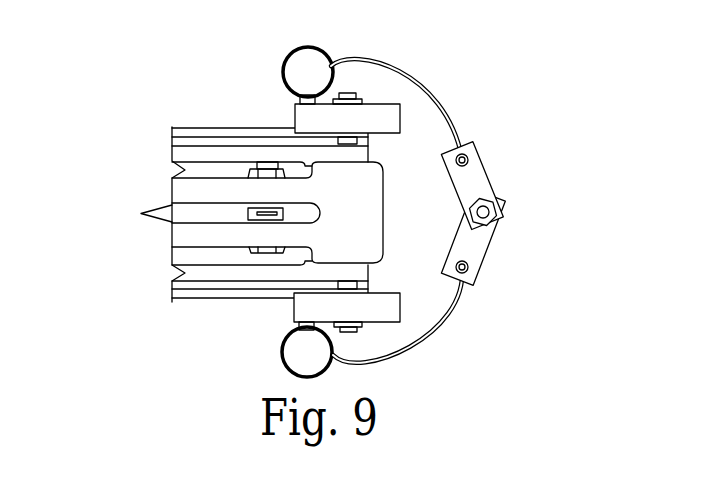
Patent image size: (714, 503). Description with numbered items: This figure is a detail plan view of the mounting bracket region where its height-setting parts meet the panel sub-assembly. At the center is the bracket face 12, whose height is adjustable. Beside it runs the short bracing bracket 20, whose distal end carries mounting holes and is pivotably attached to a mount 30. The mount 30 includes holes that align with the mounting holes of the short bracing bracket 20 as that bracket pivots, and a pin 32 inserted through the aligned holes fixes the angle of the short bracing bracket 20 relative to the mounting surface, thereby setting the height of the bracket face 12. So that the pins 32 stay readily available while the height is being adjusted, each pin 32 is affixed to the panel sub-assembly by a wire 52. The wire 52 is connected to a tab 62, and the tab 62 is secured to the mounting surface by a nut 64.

The bracket face 12 is at (367, 218).
The short bracing bracket 20 is at (245, 298).
The mount 30 is at (294, 120).
The pin 32 is at (303, 96).
The wire 52 is at (427, 80).
The tab 62 is at (481, 160).
The nut 64 is at (499, 211).